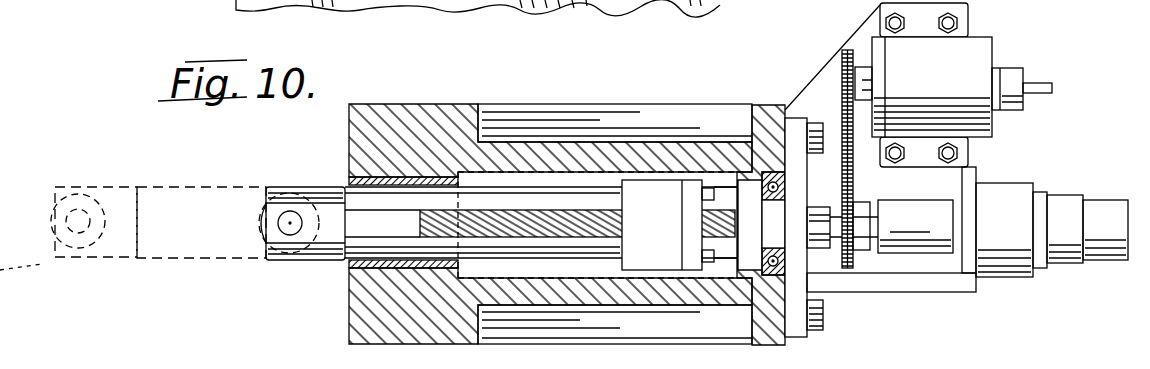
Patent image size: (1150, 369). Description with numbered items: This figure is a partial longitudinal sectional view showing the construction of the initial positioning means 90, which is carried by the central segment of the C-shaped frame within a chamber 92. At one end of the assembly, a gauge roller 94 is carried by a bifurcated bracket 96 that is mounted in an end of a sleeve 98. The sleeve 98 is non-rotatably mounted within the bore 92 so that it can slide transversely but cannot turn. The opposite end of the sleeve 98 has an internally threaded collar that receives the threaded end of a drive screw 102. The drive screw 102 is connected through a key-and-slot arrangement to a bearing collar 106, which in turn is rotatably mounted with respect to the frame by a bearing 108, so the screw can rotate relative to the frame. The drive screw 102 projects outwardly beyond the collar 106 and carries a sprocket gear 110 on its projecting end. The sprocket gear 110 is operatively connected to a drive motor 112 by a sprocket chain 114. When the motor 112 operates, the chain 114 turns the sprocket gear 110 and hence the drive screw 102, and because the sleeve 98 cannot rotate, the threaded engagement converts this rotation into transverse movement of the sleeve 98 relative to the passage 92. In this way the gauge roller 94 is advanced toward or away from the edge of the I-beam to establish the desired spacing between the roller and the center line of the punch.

The positioning means 90 is at (290, 268).
The chamber 92 is at (572, 173).
The gauge roller 94 is at (320, 242).
The bifurcated bracket 96 is at (290, 188).
The sleeve 98 is at (368, 182).
The drive screw 102 is at (490, 210).
The bearing collar 106 is at (692, 262).
The bearing 108 is at (750, 160).
The sprocket gear 110 is at (862, 200).
The drive motor 112 is at (975, 60).
The sprocket chain 114 is at (842, 63).